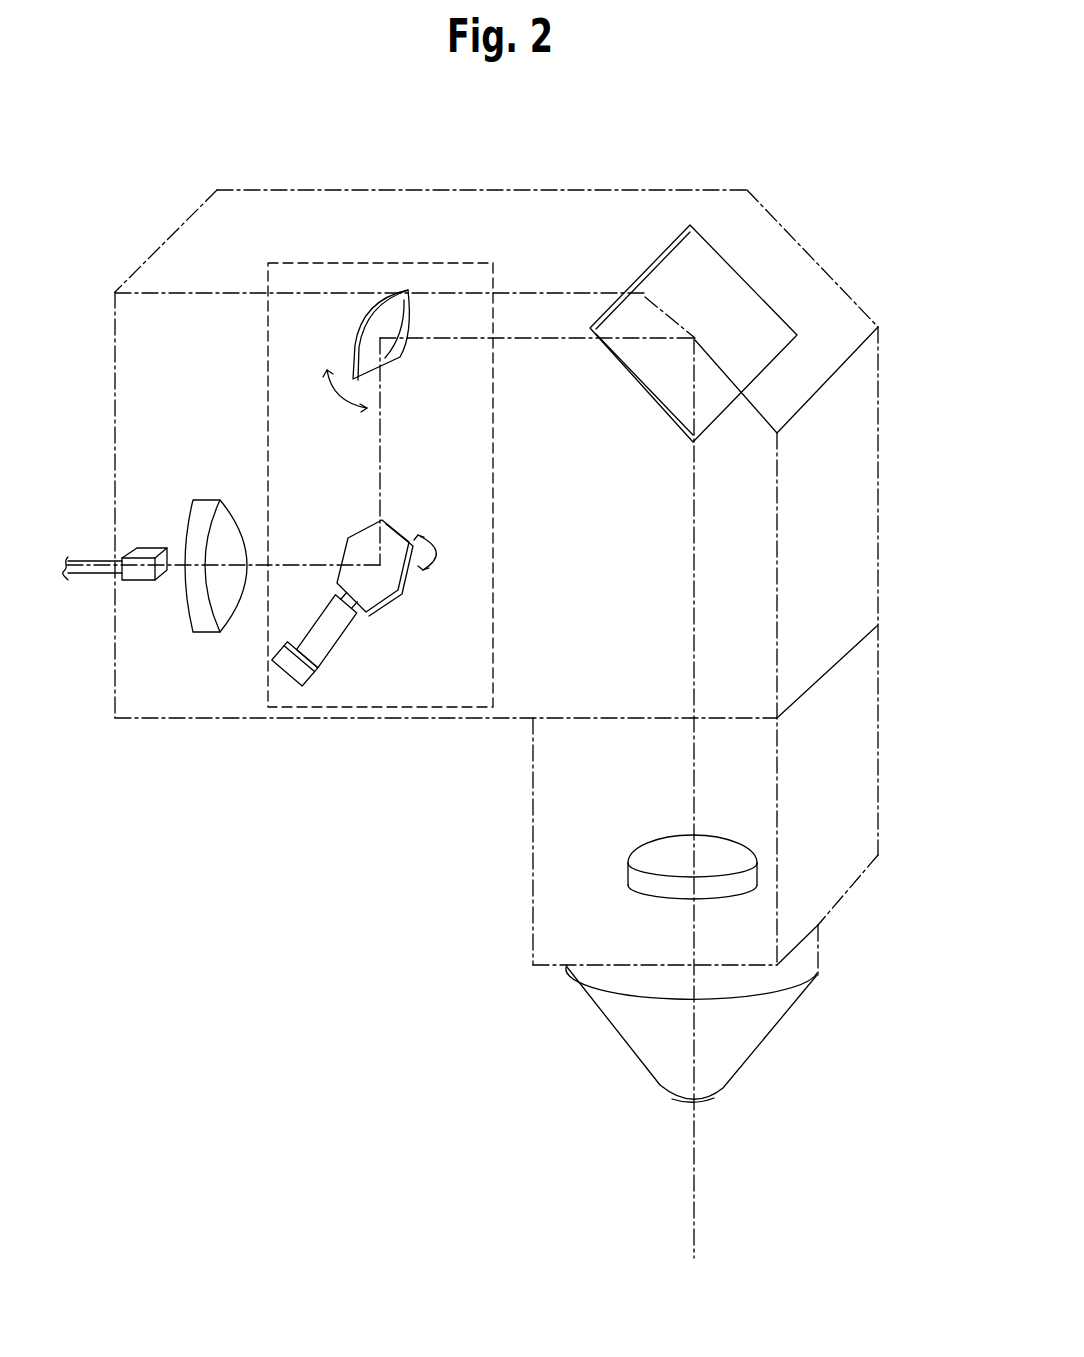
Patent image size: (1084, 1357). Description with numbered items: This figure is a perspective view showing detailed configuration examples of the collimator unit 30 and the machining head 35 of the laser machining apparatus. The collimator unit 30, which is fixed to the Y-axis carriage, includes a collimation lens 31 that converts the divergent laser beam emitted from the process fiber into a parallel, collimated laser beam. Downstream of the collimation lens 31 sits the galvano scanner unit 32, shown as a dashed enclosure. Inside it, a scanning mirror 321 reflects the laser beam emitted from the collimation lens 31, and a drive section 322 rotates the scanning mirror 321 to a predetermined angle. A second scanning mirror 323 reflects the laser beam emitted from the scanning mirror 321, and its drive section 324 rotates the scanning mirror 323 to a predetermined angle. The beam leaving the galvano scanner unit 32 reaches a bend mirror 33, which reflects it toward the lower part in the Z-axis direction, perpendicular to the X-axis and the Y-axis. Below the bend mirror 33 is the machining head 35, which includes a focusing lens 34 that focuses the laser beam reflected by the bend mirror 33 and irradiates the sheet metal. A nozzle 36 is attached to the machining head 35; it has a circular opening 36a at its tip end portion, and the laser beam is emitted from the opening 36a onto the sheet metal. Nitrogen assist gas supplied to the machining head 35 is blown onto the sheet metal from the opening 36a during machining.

The collimator unit 30 is at (566, 212).
The collimation lens 31 is at (210, 500).
The galvano scanner unit 32 is at (362, 716).
The scanning mirror 321 is at (362, 532).
The drive section 322 is at (322, 652).
The scanning mirror 323 is at (408, 289).
The drive section 324 is at (358, 320).
The bend mirror 33 is at (645, 297).
The focusing lens 34 is at (740, 850).
The machining head 35 is at (848, 790).
The nozzle 36 is at (783, 1023).
The opening 36a is at (703, 1103).